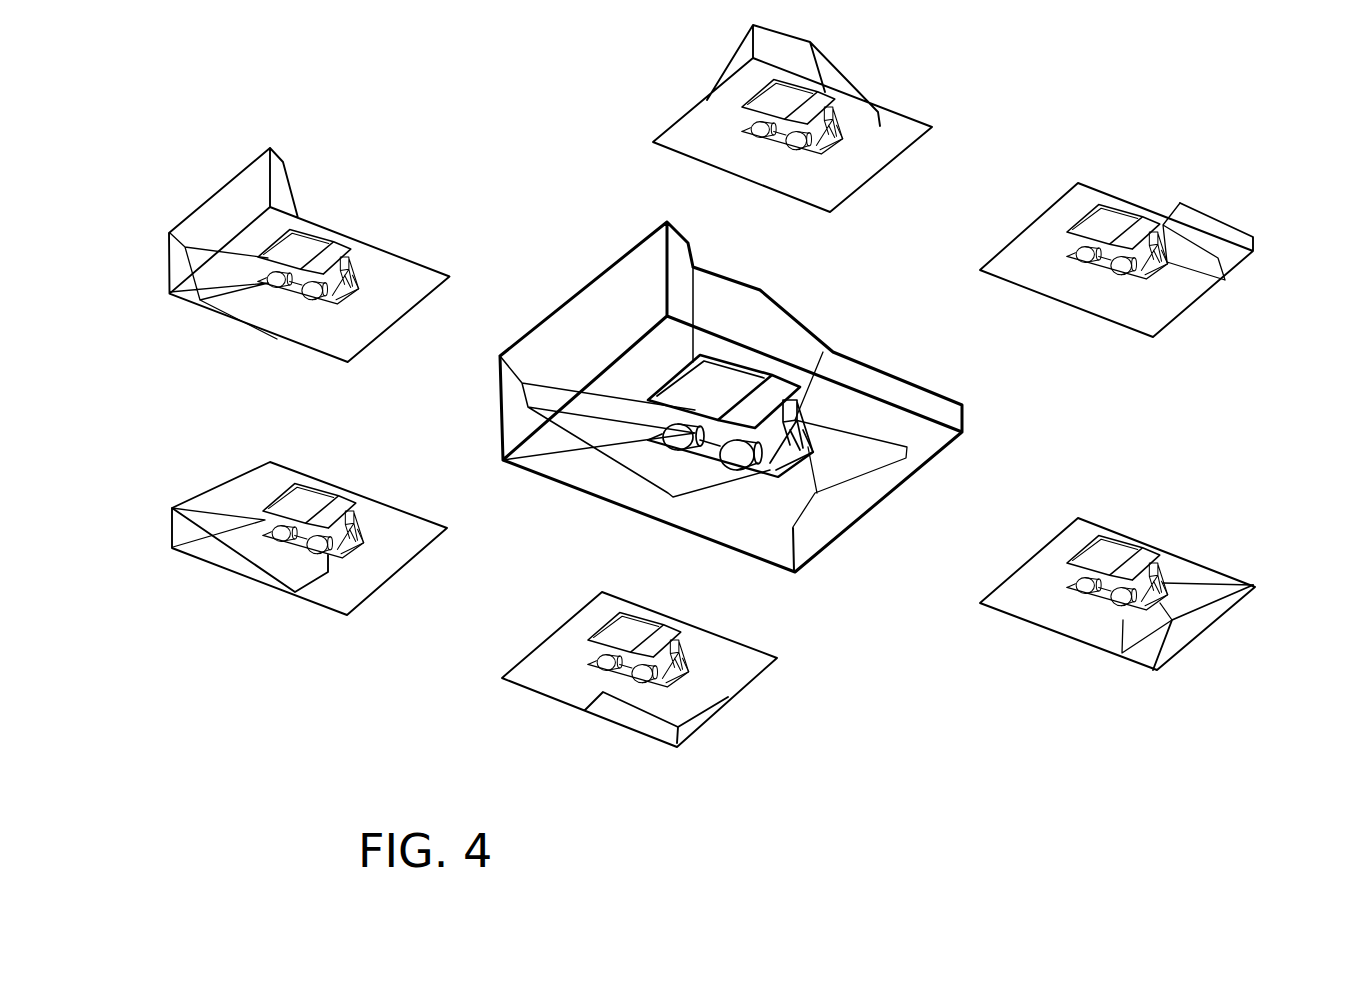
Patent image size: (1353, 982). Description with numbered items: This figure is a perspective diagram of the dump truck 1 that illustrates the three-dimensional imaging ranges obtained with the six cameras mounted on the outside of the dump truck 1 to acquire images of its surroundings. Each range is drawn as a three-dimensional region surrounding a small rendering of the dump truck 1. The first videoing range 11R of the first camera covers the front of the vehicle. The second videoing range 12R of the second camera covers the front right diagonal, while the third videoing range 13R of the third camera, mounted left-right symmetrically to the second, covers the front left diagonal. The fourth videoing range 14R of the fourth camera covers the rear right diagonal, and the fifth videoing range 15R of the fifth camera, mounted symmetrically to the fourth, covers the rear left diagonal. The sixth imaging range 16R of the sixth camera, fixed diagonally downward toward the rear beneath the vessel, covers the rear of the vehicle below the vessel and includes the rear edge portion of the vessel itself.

The dump truck 1 is at (782, 373).
The first videoing range 11R is at (1188, 634).
The second videoing range 12R is at (698, 722).
The third videoing range 13R is at (1256, 236).
The fourth videoing range 14R is at (206, 493).
The fifth videoing range 15R is at (738, 47).
The sixth imaging range 16R is at (228, 181).